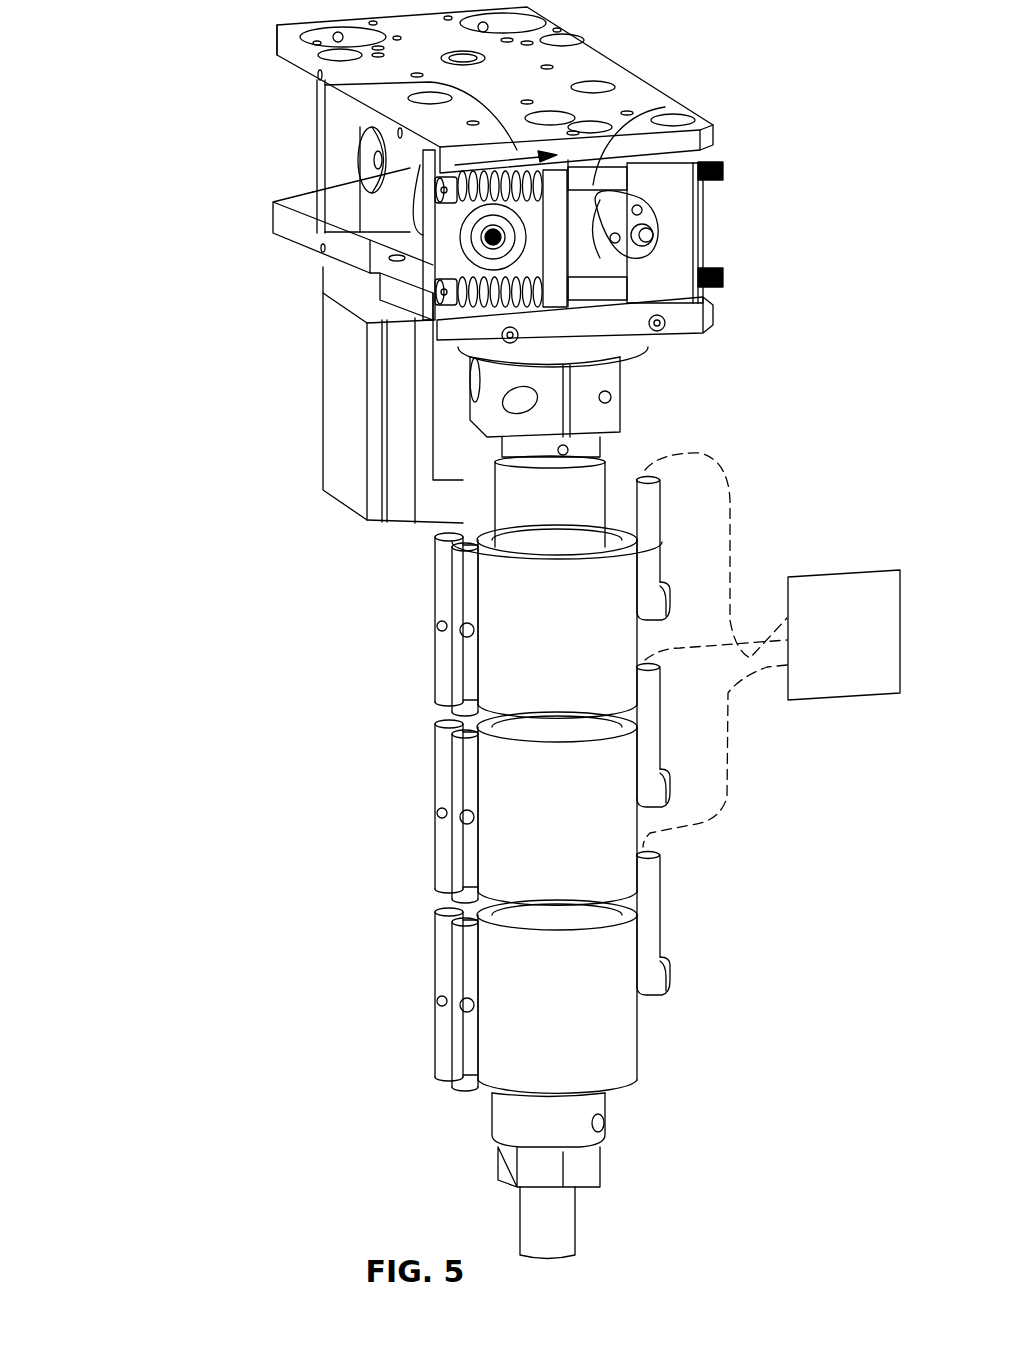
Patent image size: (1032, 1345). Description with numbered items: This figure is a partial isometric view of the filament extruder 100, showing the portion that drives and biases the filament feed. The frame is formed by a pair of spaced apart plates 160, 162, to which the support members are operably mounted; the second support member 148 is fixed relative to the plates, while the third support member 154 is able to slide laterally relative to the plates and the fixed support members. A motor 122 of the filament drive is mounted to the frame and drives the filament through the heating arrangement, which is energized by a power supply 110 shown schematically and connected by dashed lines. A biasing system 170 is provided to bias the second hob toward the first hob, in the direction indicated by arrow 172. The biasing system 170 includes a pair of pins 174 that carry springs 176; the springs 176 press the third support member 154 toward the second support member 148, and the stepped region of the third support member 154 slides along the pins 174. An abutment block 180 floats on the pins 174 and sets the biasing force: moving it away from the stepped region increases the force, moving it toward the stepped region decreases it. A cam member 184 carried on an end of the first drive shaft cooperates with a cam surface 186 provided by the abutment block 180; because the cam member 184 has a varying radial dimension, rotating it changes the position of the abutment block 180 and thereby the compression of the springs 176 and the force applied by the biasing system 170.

The filament extruder 100 is at (168, 268).
The plate 162 is at (280, 42).
The arrow 172 is at (320, 100).
The plate 160 is at (280, 220).
The third support member 154 is at (448, 263).
The springs 176 is at (423, 253).
The pins 174 is at (600, 182).
The cam member 184 is at (653, 210).
The biasing system 170 is at (745, 205).
The second support member 148 is at (703, 228).
The abutment block 180 is at (667, 253).
The cam surface 186 is at (703, 295).
The motor 122 is at (323, 428).
The power supply 110 is at (812, 577).